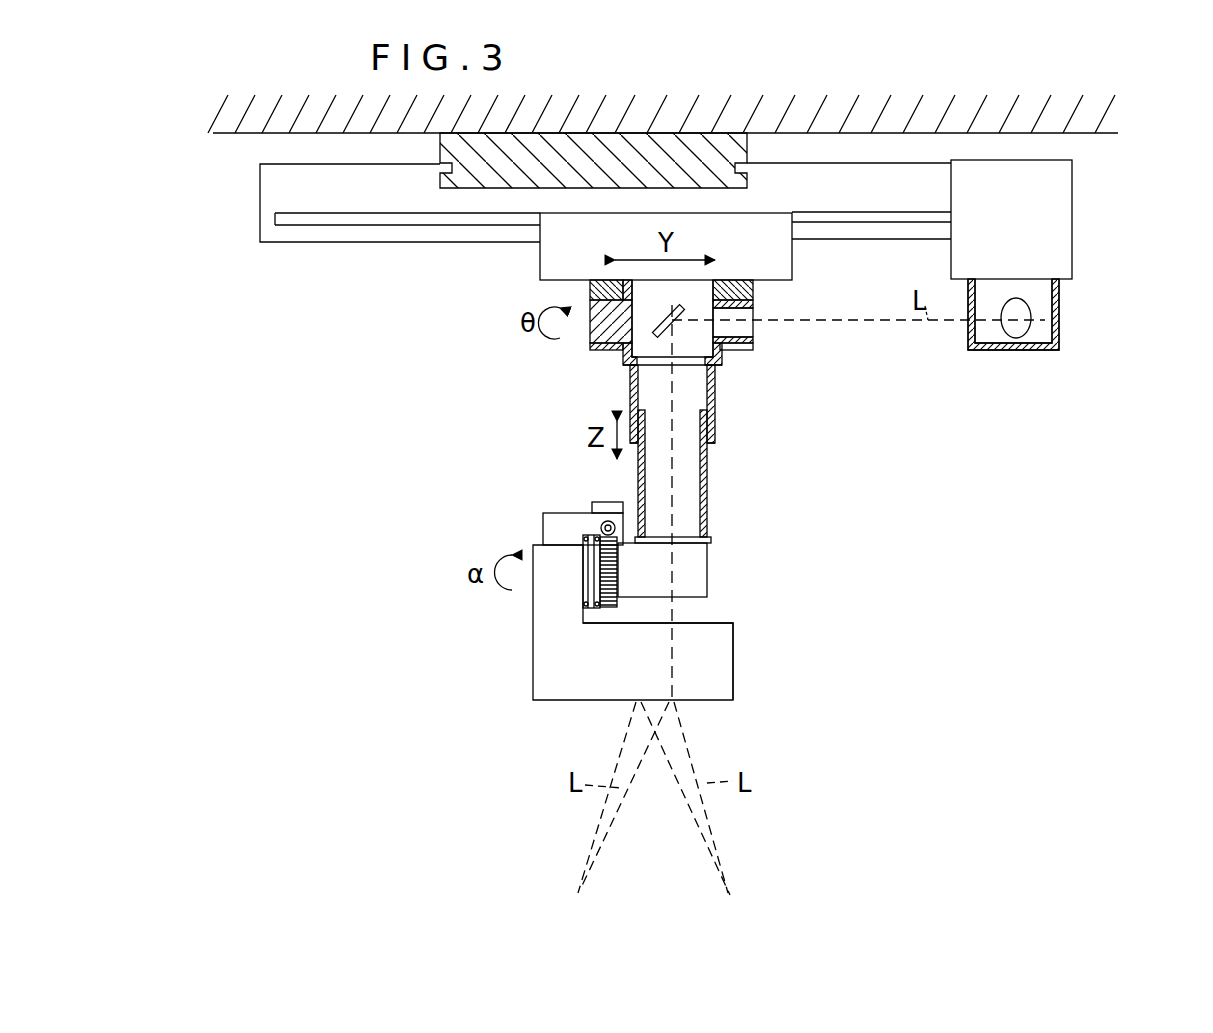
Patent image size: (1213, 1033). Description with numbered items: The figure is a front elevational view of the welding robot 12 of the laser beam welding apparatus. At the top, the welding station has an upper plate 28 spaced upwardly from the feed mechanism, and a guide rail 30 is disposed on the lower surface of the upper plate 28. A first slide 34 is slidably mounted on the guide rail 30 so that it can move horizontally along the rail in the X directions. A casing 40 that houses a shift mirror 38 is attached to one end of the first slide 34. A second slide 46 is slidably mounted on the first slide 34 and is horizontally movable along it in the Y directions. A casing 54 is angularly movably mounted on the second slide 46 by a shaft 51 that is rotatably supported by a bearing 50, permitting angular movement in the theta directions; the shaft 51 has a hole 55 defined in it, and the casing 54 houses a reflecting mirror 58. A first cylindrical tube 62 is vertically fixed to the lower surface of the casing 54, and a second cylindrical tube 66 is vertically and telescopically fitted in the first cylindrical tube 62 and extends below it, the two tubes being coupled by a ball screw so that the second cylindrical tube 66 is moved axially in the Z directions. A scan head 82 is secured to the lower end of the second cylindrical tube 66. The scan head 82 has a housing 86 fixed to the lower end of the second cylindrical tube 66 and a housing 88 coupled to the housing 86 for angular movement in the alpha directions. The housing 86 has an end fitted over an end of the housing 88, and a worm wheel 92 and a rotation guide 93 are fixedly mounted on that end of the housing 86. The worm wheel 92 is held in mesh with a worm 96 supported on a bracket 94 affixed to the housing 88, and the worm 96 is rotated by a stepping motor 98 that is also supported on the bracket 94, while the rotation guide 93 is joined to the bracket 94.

The welding robot 12 is at (452, 457).
The upper plate 28 is at (1083, 117).
The guide rail 30 is at (635, 143).
The first slide 34 is at (357, 205).
The shift mirror 38 is at (1022, 317).
The casing 40 is at (1053, 350).
The second slide 46 is at (540, 264).
The bearing 50 is at (608, 352).
The shaft 51 is at (743, 332).
The casing 54 is at (722, 367).
The hole 55 is at (683, 316).
The reflecting mirror 58 is at (735, 280).
The first cylindrical tube 62 is at (713, 425).
The second cylindrical tube 66 is at (707, 500).
The scan head 82 is at (528, 645).
The housing 86 is at (697, 570).
The housing 88 is at (722, 655).
The worm wheel 92 is at (612, 600).
The rotation guide 93 is at (588, 573).
The bracket 94 is at (558, 527).
The worm 96 is at (615, 532).
The stepping motor 98 is at (605, 503).